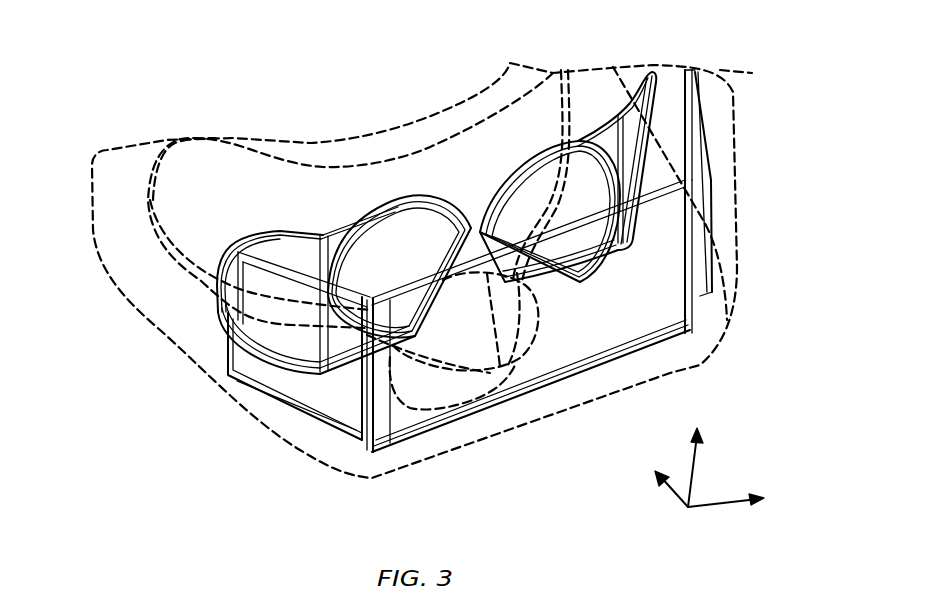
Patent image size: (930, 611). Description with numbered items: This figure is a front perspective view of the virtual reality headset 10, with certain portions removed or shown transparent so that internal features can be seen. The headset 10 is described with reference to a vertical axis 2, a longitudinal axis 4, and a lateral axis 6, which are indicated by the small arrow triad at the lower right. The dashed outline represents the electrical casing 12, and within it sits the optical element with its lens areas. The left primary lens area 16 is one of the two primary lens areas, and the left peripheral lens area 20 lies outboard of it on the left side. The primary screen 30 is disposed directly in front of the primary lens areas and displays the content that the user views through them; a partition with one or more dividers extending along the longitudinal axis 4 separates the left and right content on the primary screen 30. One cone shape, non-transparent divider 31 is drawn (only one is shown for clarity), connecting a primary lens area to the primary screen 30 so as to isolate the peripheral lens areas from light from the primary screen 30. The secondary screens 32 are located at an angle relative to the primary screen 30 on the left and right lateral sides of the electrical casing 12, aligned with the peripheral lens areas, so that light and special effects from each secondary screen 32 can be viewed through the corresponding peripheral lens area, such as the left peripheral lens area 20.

The virtual reality headset 10 is at (140, 33).
The electrical casing 12 is at (96, 168).
The left primary lens area 16 is at (397, 247).
The left peripheral lens area 20 is at (283, 247).
The primary screen 30 is at (600, 327).
The cone shape, non-transparent divider 31 is at (470, 397).
The secondary screen 32 is at (293, 383).
The vertical axis 2 is at (697, 455).
The longitudinal axis 4 is at (677, 498).
The lateral axis 6 is at (717, 510).